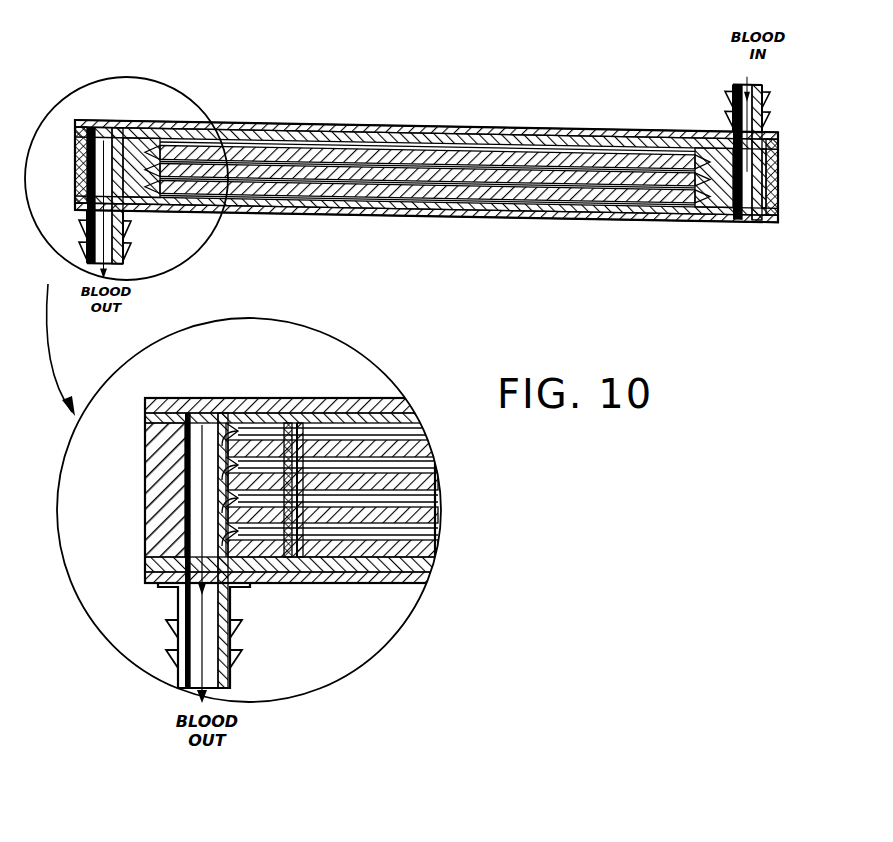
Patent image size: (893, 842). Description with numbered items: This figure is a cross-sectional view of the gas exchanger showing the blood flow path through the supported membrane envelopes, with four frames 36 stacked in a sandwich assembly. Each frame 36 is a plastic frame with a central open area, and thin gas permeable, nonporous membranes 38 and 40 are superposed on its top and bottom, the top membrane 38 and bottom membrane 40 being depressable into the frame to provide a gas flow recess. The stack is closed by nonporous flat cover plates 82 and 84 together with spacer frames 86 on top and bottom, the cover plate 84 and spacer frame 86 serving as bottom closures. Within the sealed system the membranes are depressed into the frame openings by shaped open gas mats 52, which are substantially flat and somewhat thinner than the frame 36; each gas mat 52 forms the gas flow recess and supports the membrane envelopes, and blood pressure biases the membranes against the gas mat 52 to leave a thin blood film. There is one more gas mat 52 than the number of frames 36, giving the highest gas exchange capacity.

The frame 36 is at (78, 172).
The top membrane 38 is at (297, 560).
The bottom membrane 40 is at (303, 560).
The shaped open gas mat 52 is at (376, 136).
The cover plate 82 is at (318, 104).
The cover plate 84 is at (86, 213).
The spacer frame 86 is at (83, 127).